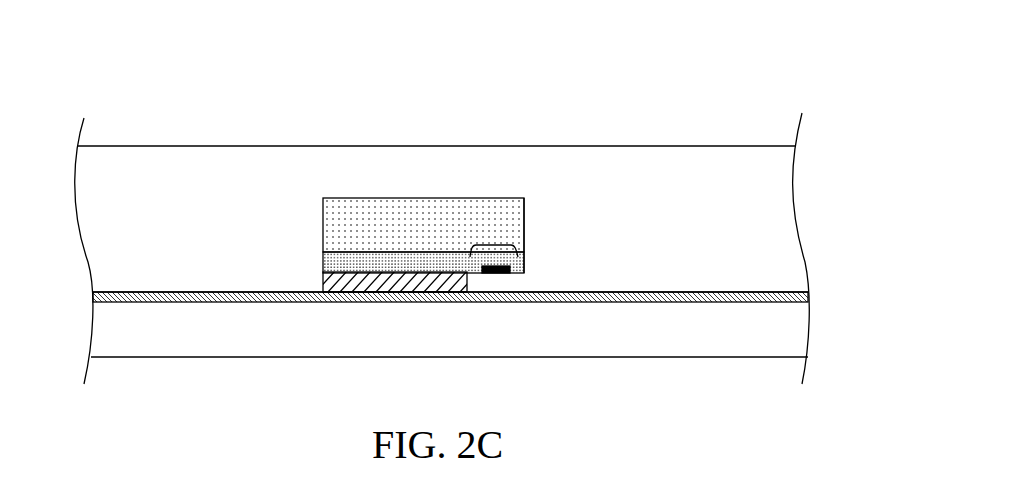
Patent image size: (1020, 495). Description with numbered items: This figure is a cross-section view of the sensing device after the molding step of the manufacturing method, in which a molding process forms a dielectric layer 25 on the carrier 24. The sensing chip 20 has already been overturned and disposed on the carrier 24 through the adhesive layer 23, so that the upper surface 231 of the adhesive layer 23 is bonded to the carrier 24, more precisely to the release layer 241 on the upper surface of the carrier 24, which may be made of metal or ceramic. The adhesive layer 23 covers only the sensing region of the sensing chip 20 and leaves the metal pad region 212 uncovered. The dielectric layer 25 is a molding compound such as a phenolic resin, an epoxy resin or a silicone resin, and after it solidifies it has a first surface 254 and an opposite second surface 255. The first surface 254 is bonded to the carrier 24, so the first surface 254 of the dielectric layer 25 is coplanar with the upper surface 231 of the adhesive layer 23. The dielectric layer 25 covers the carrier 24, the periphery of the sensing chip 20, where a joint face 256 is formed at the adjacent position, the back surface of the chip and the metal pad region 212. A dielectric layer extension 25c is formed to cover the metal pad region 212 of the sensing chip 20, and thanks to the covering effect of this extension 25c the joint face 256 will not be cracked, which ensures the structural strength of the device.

The sensing chip 20 is at (339, 185).
The metal pad region 212 is at (494, 245).
The adhesive layer 23 is at (323, 283).
The upper surface of the adhesive layer 231 is at (372, 302).
The carrier 24 is at (449, 333).
The release layer 241 is at (812, 296).
The dielectric layer 25 is at (442, 248).
The first surface 254 is at (188, 292).
The second surface 255 is at (188, 146).
The joint face 256 is at (525, 209).
The dielectric layer extension 25c is at (502, 282).